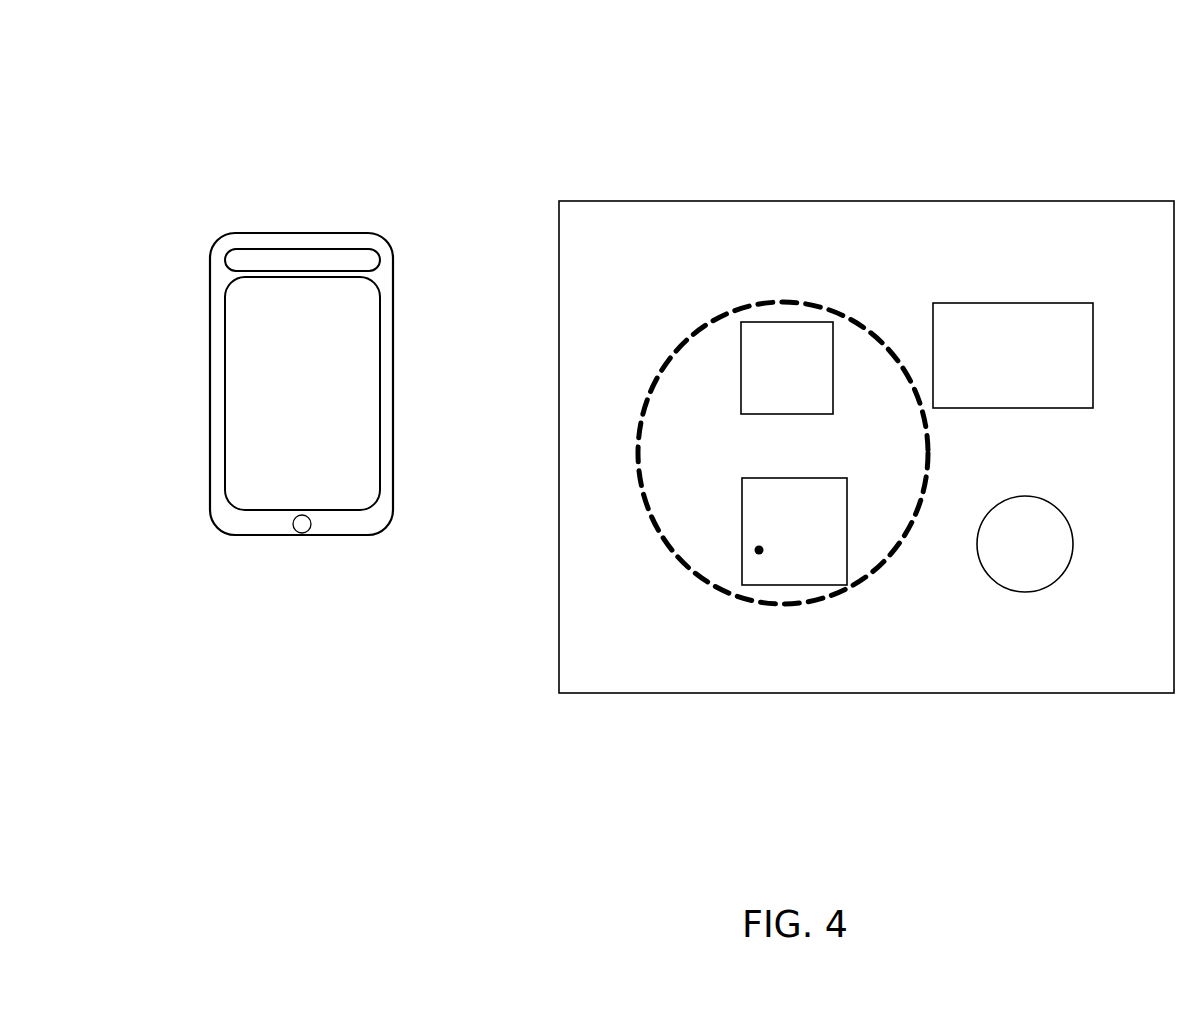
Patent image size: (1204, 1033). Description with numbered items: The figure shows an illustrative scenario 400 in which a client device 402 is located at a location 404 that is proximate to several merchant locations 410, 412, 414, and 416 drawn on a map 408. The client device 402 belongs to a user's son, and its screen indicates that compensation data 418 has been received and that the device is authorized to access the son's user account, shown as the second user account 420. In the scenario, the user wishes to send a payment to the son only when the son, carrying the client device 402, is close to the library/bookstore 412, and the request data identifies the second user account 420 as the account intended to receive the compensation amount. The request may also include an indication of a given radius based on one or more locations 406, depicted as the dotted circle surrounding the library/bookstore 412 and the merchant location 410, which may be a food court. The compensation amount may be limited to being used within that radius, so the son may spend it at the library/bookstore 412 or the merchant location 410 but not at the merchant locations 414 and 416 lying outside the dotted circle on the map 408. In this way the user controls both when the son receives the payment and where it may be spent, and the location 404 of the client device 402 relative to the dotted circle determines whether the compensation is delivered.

The system / environment 400 is at (232, 48).
The client device 402 is at (301, 368).
The location 404 is at (759, 550).
The one or more locations 406 is at (823, 306).
The map 408 is at (1089, 200).
The merchant location 410 is at (787, 368).
The library/bookstore 412 is at (794, 531).
The merchant location 414 is at (1013, 355).
The merchant location 416 is at (1025, 544).
The compensation data 418 is at (302, 334).
The second user account 420 is at (302, 445).